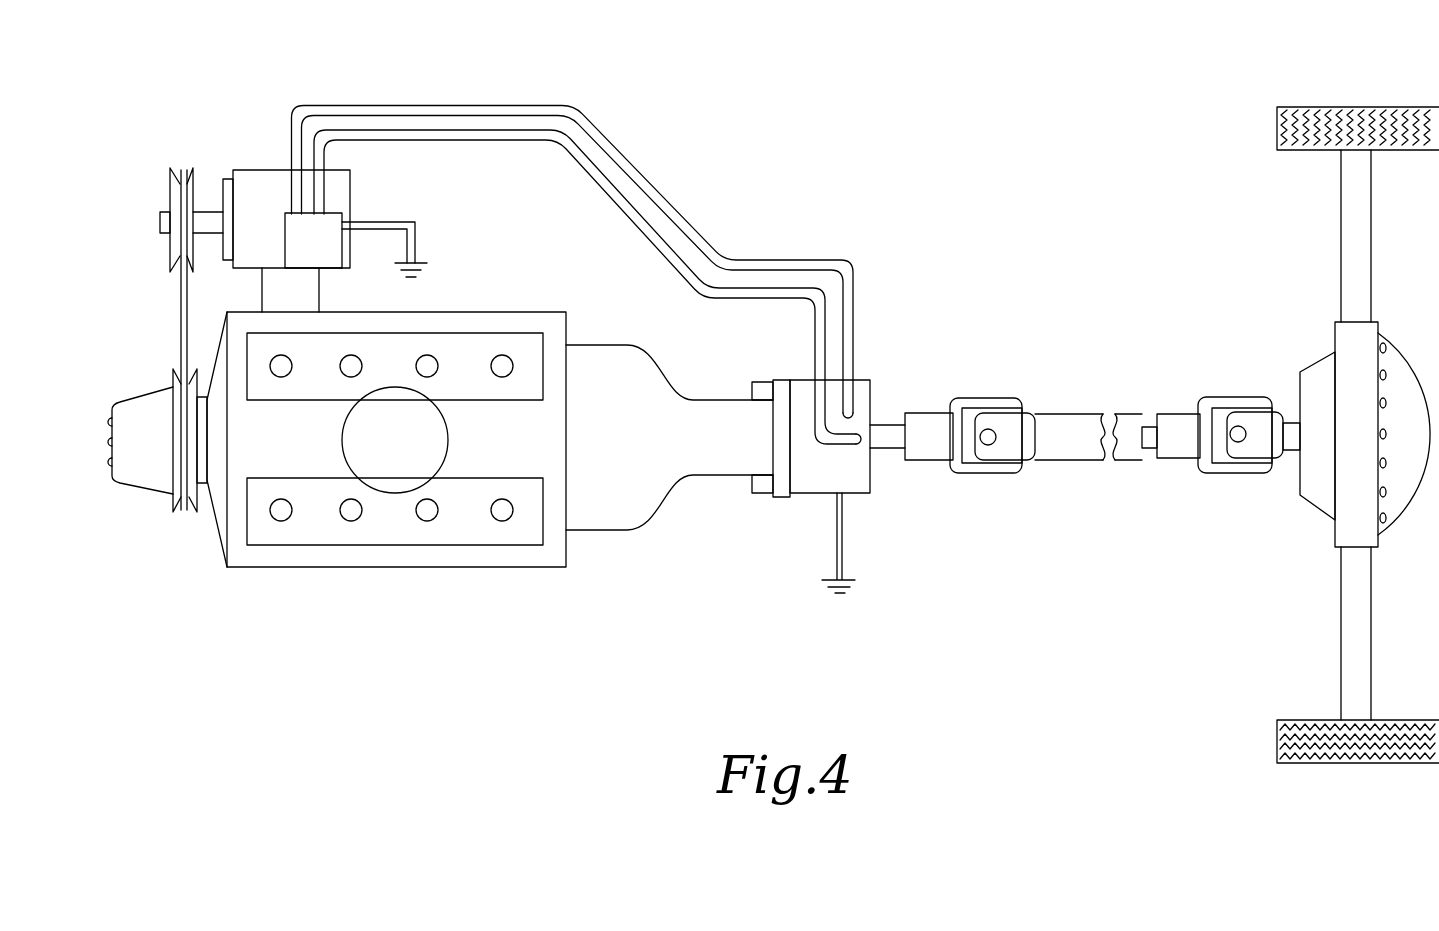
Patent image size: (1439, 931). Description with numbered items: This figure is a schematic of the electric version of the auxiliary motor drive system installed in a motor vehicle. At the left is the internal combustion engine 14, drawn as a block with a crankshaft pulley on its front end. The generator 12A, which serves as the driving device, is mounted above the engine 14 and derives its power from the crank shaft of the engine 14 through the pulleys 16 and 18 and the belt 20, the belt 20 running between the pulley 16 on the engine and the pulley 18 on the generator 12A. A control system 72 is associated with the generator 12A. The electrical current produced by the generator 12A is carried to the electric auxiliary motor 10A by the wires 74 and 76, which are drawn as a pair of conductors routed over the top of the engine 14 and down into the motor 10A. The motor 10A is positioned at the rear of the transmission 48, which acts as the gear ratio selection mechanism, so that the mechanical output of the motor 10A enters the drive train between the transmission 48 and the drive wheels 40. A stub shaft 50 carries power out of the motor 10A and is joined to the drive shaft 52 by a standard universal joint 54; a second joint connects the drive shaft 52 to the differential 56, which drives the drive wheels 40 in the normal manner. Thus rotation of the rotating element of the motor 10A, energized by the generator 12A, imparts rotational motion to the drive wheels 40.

The electric auxiliary motor 10A is at (862, 482).
The generator 12A is at (257, 192).
The internal combustion engine 14 is at (463, 532).
The pulley 16 is at (175, 512).
The pulley 18 is at (187, 195).
The belt 20 is at (180, 335).
The drive wheels 40 is at (1325, 118).
The transmission 48 is at (640, 510).
The stub shaft 50 is at (880, 428).
The drive shaft 52 is at (1068, 455).
The universal joint 54 is at (998, 468).
The differential 56 is at (1400, 365).
The control system 72 is at (343, 250).
The wire 74 is at (520, 108).
The wire 76 is at (595, 180).